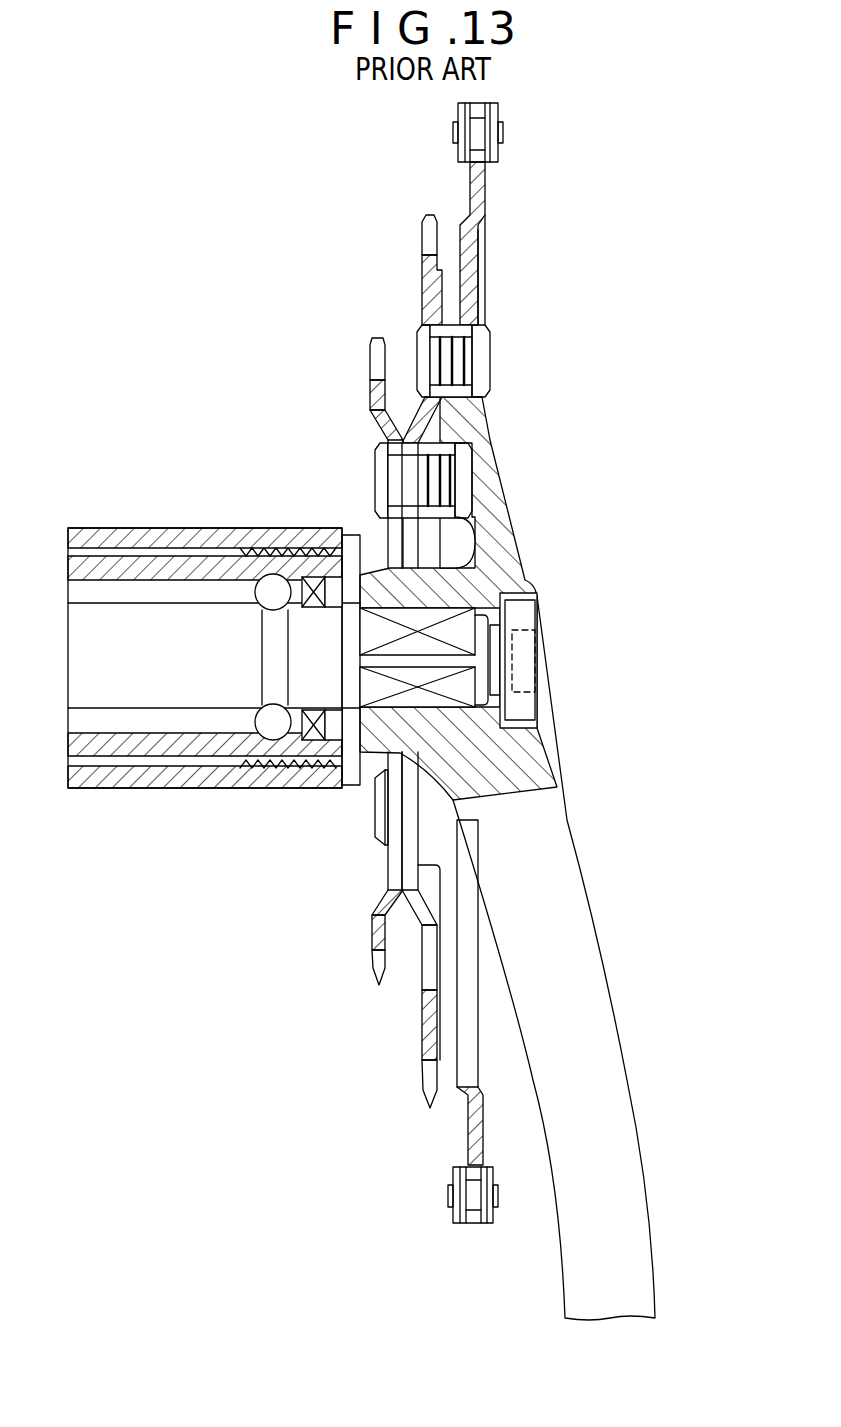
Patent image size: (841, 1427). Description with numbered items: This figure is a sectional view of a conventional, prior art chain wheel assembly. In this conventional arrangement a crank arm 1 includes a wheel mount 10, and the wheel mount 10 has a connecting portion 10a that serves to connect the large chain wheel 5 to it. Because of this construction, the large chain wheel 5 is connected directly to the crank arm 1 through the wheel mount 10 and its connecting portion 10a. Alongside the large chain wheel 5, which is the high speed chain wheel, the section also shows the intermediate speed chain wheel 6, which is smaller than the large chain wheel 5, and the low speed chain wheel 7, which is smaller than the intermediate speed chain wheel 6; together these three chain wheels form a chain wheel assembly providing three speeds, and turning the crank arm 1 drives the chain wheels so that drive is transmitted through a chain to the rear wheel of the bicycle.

The crank arm 1 is at (575, 897).
The large chain wheel 5 is at (482, 265).
The intermediate speed chain wheel 6 is at (420, 282).
The low speed chain wheel 7 is at (370, 398).
The wheel mount 10 is at (480, 438).
The connecting portion 10a is at (480, 300).